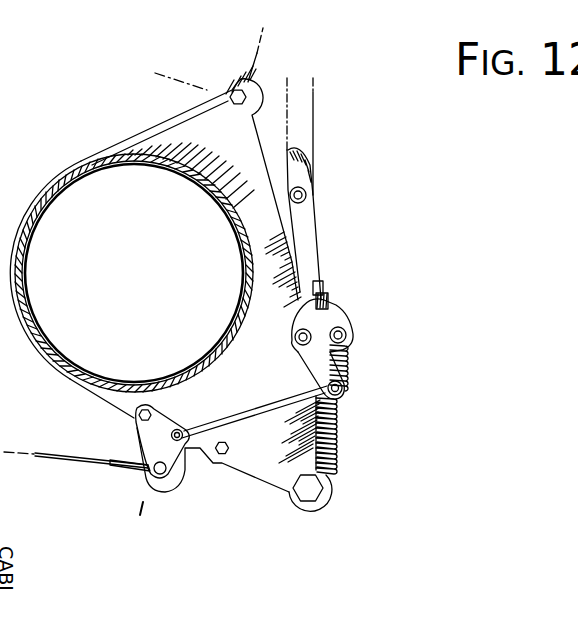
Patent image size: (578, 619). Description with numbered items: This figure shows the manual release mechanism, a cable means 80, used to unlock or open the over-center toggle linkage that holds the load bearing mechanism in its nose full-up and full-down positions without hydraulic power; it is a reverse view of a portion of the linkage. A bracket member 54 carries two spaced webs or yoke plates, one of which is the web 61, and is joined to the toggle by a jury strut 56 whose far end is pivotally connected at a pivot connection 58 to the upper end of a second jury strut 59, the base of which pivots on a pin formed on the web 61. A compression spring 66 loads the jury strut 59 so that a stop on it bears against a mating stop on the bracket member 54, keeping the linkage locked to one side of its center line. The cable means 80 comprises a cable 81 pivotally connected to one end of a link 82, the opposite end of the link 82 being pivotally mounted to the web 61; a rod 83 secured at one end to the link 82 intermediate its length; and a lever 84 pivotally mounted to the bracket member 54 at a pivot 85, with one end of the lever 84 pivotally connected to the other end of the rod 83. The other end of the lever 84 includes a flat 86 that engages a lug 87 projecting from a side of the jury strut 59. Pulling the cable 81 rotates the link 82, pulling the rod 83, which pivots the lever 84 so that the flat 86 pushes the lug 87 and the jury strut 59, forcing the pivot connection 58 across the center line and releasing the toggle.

The bracket member 54 is at (126, 142).
The jury strut 56 is at (316, 140).
The pivot connection 58 is at (306, 195).
The jury strut 59 is at (322, 232).
The web 61 is at (246, 477).
The compression spring 66 is at (337, 428).
The cable means 80 is at (131, 535).
The cable 81 is at (77, 465).
The link 82 is at (133, 438).
The rod 83 is at (217, 418).
The lever 84 is at (304, 362).
The pivot 85 is at (296, 340).
The flat 86 is at (322, 289).
The lug 87 is at (330, 302).